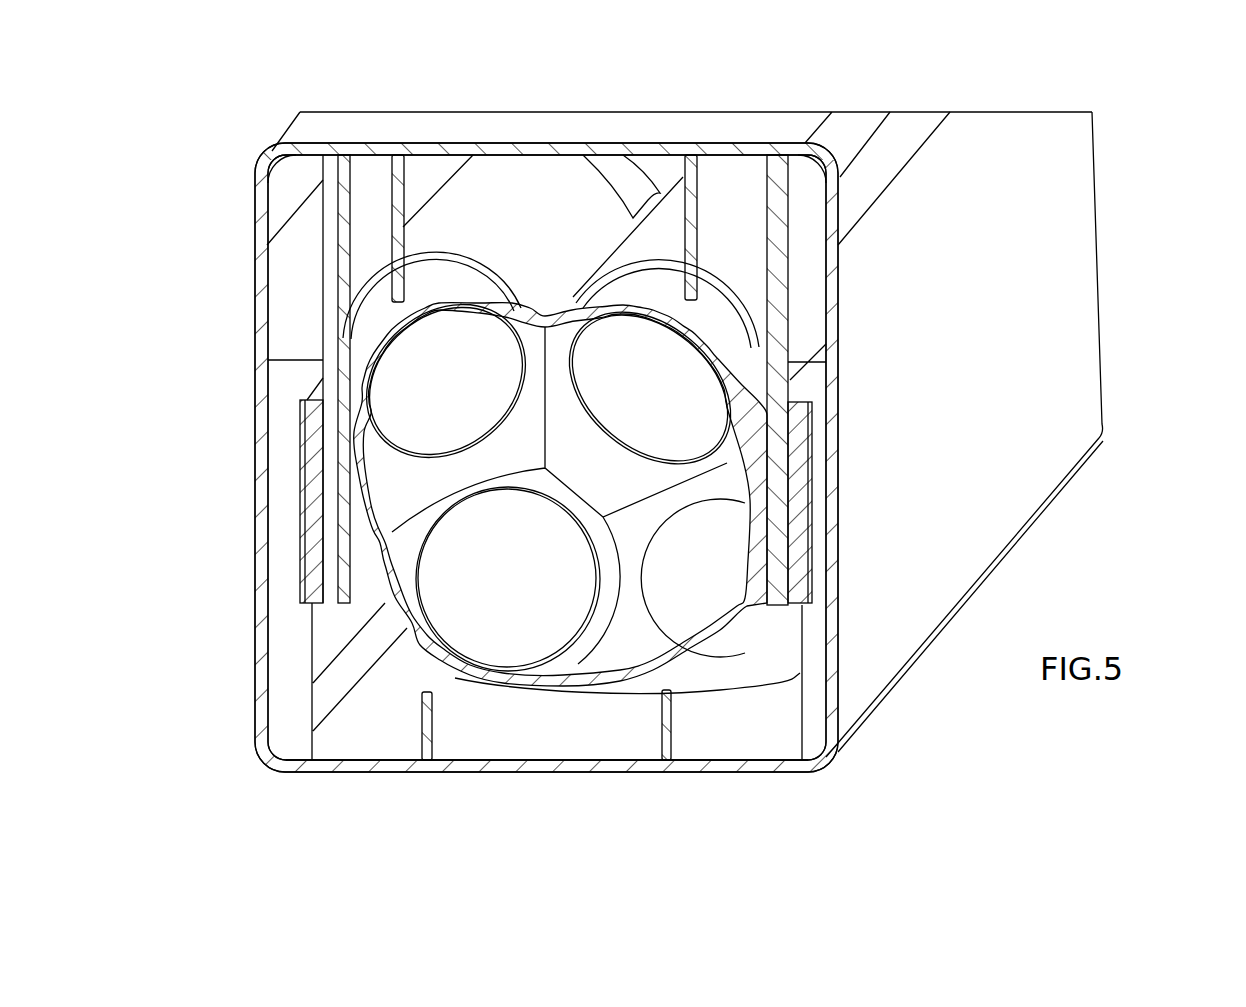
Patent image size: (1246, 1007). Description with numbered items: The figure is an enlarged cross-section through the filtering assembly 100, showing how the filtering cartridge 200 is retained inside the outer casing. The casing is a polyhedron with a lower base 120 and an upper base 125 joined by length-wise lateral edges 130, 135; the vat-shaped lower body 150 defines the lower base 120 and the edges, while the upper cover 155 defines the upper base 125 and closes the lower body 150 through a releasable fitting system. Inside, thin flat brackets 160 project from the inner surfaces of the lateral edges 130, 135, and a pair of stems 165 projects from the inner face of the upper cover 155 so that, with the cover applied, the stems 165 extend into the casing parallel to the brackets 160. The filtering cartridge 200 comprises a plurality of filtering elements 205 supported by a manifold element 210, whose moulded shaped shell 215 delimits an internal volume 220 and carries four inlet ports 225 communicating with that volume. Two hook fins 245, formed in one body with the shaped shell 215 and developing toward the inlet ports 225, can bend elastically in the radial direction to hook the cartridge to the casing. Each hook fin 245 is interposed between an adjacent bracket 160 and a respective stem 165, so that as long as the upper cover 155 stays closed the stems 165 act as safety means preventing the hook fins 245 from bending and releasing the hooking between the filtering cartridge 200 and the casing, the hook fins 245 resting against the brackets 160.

The filtering assembly 100 is at (190, 133).
The lower base 120 is at (580, 773).
The upper base 125 is at (375, 130).
The lateral edge 130 is at (1075, 193).
The lateral edge 135 is at (263, 450).
The lower body 150 is at (1063, 503).
The upper cover 155 is at (888, 140).
The bracket 160 is at (283, 580).
The stem 165 is at (333, 292).
The filtering cartridge 200 is at (577, 222).
The filtering element 205 is at (527, 205).
The manifold element 210 is at (713, 690).
The shaped shell 215 is at (410, 641).
The internal volume 220 is at (534, 557).
The inlet port 225 is at (617, 438).
The hook fin 245 is at (315, 425).